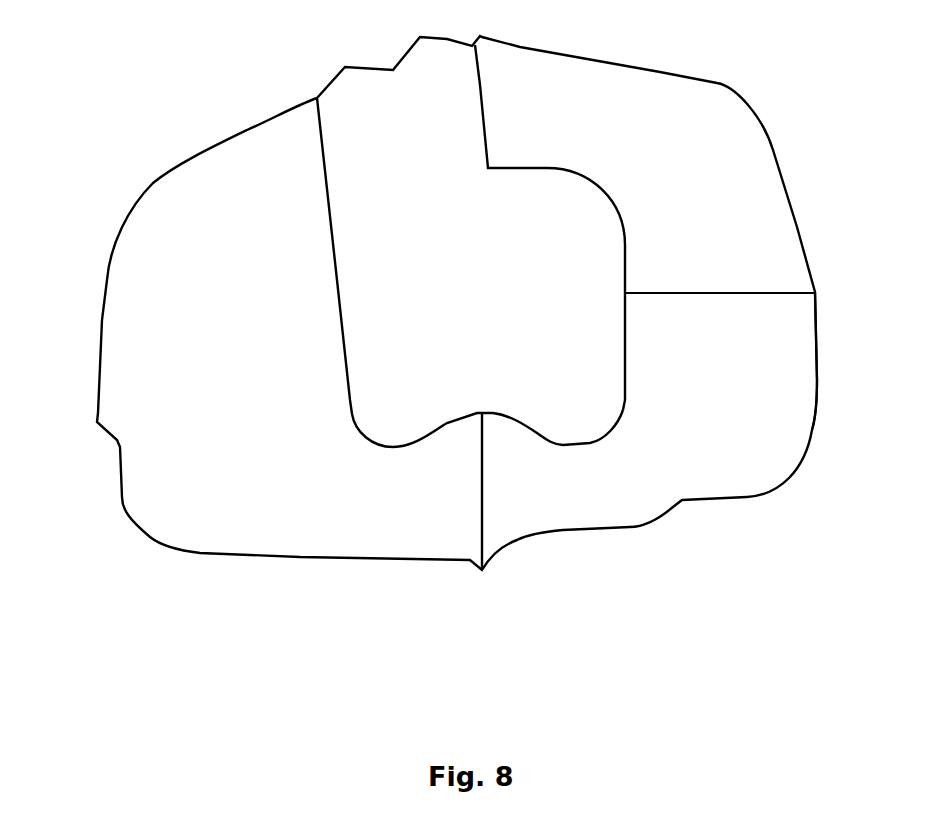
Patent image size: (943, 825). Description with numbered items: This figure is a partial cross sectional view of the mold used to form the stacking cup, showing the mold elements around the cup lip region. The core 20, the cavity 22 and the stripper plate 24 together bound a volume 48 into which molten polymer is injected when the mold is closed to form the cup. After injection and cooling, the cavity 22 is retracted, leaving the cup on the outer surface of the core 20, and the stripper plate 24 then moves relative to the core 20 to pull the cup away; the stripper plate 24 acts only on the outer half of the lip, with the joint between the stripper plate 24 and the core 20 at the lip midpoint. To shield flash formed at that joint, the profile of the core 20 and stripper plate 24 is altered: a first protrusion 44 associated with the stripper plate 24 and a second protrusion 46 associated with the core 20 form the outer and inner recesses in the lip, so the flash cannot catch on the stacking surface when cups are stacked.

The core 20 is at (132, 365).
The cavity 22 is at (728, 125).
The stripper plate 24 is at (803, 377).
The first protrusion 44 is at (510, 442).
The second protrusion 46 is at (450, 440).
The volume 48 is at (477, 303).